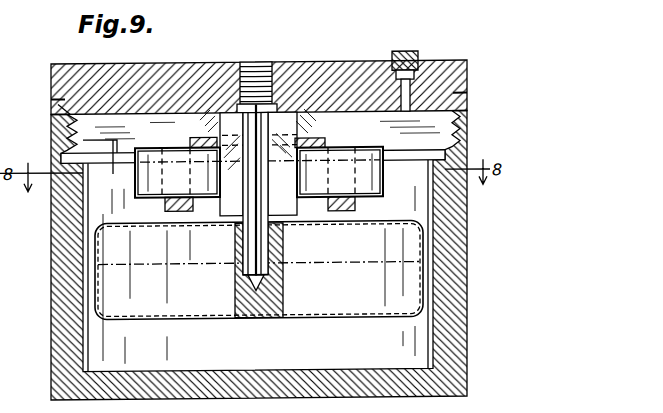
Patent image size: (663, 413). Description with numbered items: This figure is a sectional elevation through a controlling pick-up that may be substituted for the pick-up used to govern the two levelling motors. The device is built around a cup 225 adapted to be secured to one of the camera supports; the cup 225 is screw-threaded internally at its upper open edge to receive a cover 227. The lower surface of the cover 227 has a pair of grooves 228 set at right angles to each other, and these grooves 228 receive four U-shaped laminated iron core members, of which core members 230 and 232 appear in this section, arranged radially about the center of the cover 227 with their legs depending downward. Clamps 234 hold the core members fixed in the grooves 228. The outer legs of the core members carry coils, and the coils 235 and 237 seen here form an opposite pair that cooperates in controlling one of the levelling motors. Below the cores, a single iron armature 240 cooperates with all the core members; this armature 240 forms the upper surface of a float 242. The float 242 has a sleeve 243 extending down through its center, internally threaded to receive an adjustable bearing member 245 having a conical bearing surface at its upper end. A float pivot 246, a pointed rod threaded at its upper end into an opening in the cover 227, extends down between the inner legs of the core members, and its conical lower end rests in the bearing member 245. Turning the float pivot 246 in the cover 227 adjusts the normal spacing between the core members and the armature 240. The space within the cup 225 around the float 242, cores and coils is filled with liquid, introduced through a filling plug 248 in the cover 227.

The cup 225 is at (452, 286).
The cover 227 is at (455, 84).
The grooves 228 is at (433, 122).
The U-shaped laminated iron core member 230 is at (175, 130).
The U-shaped laminated iron core member 232 is at (322, 131).
The clamps 234 is at (207, 142).
The coil 235 is at (147, 198).
The coil 237 is at (378, 182).
The armature 240 is at (320, 226).
The float 242 is at (355, 298).
The sleeve 243 is at (283, 300).
The adjustable bearing member 245 is at (267, 320).
The float pivot 246 is at (250, 238).
The filling plug 248 is at (398, 62).